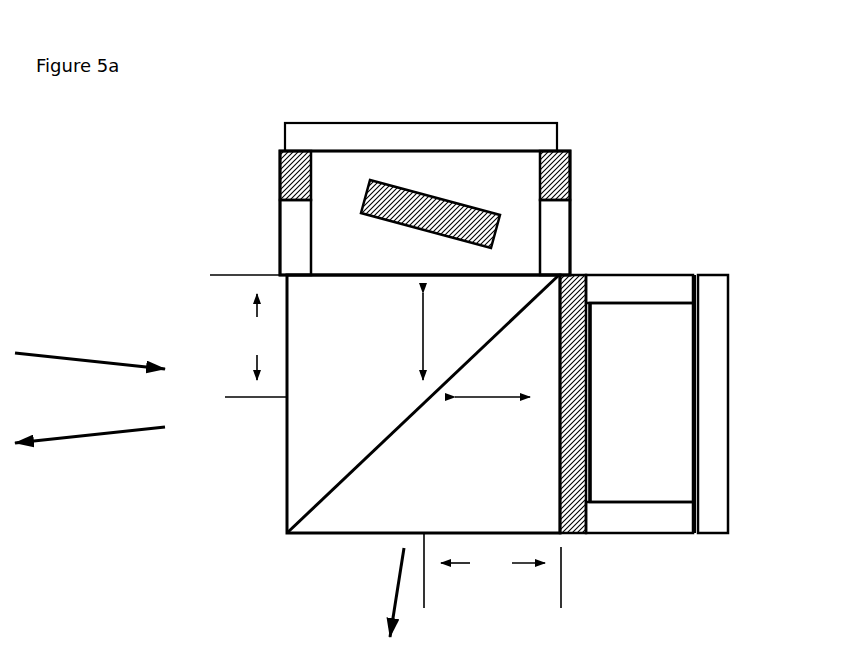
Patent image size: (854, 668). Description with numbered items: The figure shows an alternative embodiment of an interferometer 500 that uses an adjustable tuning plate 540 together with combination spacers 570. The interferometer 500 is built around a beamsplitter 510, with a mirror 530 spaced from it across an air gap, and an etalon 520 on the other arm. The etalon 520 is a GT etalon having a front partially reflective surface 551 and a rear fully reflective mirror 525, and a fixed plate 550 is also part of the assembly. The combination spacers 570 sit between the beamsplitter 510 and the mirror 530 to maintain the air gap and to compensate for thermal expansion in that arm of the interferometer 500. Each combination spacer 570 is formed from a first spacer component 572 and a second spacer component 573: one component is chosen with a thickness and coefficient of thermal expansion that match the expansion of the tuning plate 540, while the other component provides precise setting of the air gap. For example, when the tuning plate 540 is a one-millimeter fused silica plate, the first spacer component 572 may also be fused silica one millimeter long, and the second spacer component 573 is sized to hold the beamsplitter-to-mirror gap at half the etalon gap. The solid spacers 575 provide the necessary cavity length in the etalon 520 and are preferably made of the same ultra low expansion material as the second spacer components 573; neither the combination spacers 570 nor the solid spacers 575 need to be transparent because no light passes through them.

The interferometer 500 is at (372, 90).
The beamsplitter 510 is at (270, 550).
The etalon 520 is at (737, 393).
The rear fully reflective mirror 525 is at (713, 275).
The mirror 530 is at (283, 122).
The adjustable tuning plate 540 is at (395, 190).
The fixed plate 550 is at (577, 533).
The front partially reflective surface 551 is at (592, 370).
The combination spacers 570 is at (250, 199).
The first spacer component 572 is at (277, 166).
The second spacer component 573 is at (278, 229).
The solid spacers 575 is at (660, 290).